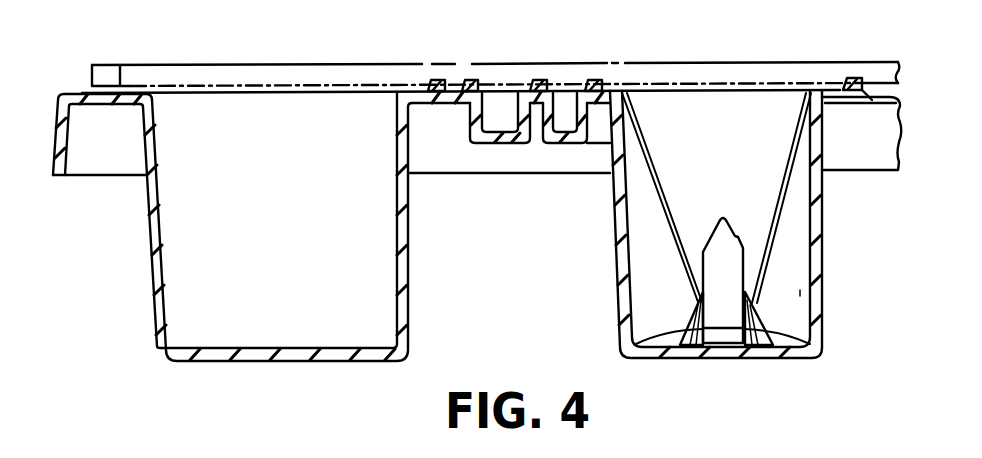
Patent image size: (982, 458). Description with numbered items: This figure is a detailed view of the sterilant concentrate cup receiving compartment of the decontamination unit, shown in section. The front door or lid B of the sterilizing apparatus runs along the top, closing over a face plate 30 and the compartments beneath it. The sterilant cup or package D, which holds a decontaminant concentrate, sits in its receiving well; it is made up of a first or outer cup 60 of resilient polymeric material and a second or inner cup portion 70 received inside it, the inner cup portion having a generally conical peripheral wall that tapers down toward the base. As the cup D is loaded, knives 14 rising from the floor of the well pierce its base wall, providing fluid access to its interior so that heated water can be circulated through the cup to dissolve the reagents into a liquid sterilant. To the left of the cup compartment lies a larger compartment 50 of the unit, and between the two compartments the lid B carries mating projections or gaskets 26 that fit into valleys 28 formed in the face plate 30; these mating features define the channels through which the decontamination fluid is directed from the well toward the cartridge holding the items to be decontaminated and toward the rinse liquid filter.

The front door B is at (664, 62).
The face plate 30 is at (74, 77).
The bucket compartment 50 is at (290, 264).
The valleys 28 is at (483, 143).
The projections or gaskets 26 is at (538, 140).
The outer cup 60 is at (818, 212).
The inner cup portion 70 is at (773, 250).
The knives 14 is at (726, 267).
The cup or package D is at (800, 293).